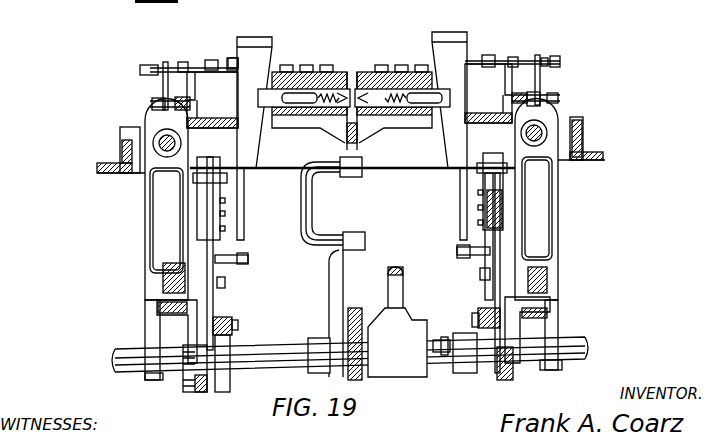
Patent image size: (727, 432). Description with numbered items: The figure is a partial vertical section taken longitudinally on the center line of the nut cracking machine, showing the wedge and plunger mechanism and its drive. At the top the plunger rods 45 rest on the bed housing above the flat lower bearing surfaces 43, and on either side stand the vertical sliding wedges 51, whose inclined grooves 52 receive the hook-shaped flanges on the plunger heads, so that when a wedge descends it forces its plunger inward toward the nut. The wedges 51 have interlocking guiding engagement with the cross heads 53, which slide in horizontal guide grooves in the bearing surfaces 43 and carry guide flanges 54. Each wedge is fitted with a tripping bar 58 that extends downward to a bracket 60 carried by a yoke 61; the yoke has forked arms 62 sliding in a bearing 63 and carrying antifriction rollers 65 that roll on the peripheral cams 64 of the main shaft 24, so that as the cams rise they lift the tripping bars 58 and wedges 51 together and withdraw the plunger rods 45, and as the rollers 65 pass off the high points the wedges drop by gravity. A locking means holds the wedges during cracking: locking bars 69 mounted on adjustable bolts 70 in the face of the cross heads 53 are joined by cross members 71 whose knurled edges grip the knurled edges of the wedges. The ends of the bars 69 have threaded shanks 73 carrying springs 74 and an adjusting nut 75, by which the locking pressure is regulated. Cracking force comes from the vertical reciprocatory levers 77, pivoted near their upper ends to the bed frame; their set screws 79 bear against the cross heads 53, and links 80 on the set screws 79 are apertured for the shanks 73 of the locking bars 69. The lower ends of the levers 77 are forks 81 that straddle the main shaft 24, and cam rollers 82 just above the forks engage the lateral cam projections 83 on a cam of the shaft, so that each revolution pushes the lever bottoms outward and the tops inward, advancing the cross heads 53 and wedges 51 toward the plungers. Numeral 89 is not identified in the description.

The main shaft 24 is at (117, 367).
The lower bearing surfaces 43 is at (352, 107).
The plunger rods 45 is at (317, 72).
The vertical sliding wedges 51 is at (237, 44).
The inclined grooves 52 is at (263, 170).
The cross heads 53 is at (230, 90).
The guide flanges 54 is at (512, 102).
The tripping bars 58 is at (244, 207).
The brackets 60 is at (249, 258).
The yokes 61 is at (223, 302).
The forked arms 62 is at (208, 382).
The bearing 63 is at (218, 237).
The peripheral cams 64 is at (230, 388).
The antifriction rollers 65 is at (228, 322).
The locking bars 69 is at (204, 66).
The adjustable bolts 70 is at (202, 62).
The cross members 71 is at (487, 56).
The threaded shanks 73 is at (549, 58).
The springs 74 is at (165, 62).
The adjusting nut 75 is at (145, 64).
The reciprocatory levers 77 is at (167, 158).
The set screws 79 is at (152, 101).
The links 80 is at (162, 72).
The forks 81 is at (147, 343).
The cam rollers 82 is at (158, 305).
The cam projections 83 is at (165, 310).
The hub 89 is at (193, 381).